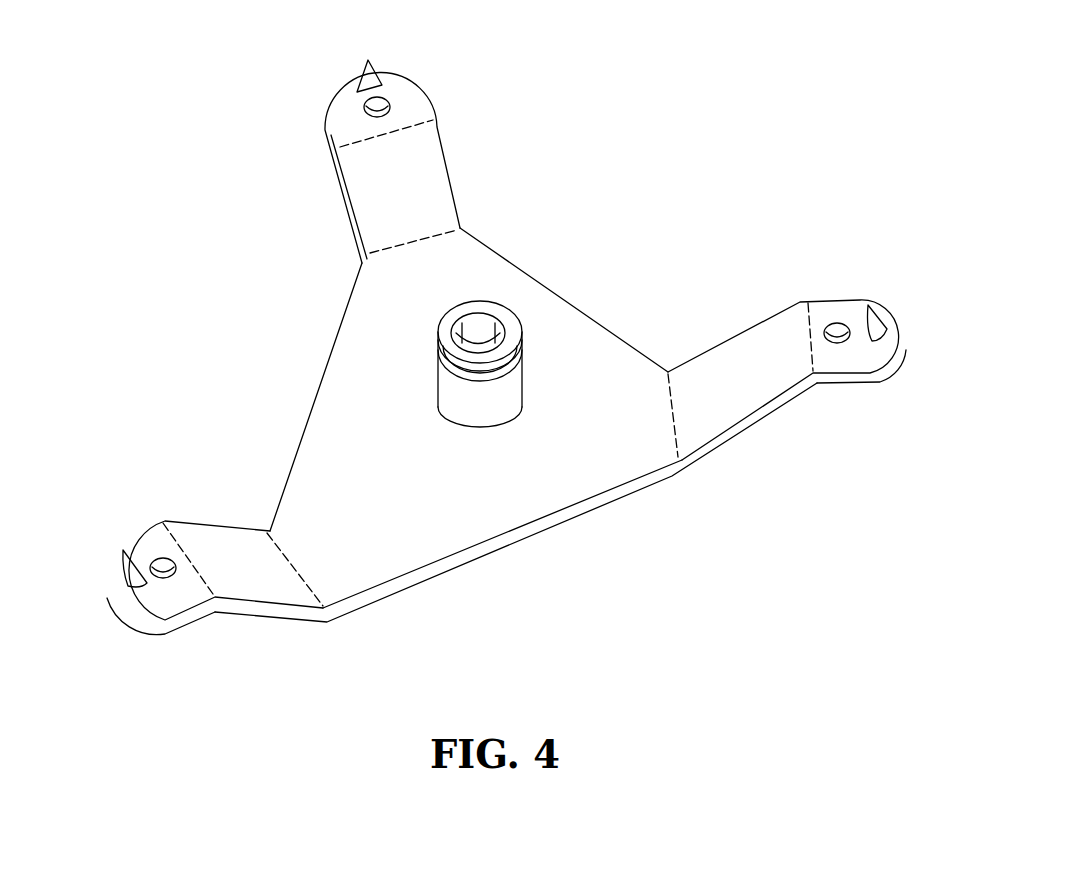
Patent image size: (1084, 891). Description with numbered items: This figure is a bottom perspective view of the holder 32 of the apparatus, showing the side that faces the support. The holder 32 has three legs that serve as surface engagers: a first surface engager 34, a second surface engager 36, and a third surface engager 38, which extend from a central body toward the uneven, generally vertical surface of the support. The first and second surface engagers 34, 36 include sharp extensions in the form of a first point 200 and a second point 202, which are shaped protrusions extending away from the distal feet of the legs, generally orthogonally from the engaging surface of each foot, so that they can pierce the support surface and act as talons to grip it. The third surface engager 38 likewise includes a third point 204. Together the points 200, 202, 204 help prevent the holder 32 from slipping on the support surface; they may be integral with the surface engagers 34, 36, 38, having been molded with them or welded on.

The holder 32 is at (502, 319).
The first surface engager 34 is at (815, 351).
The second surface engager 36 is at (371, 136).
The third surface engager 38 is at (182, 551).
The first point 200 is at (883, 323).
The second point 202 is at (375, 80).
The third point 204 is at (123, 573).